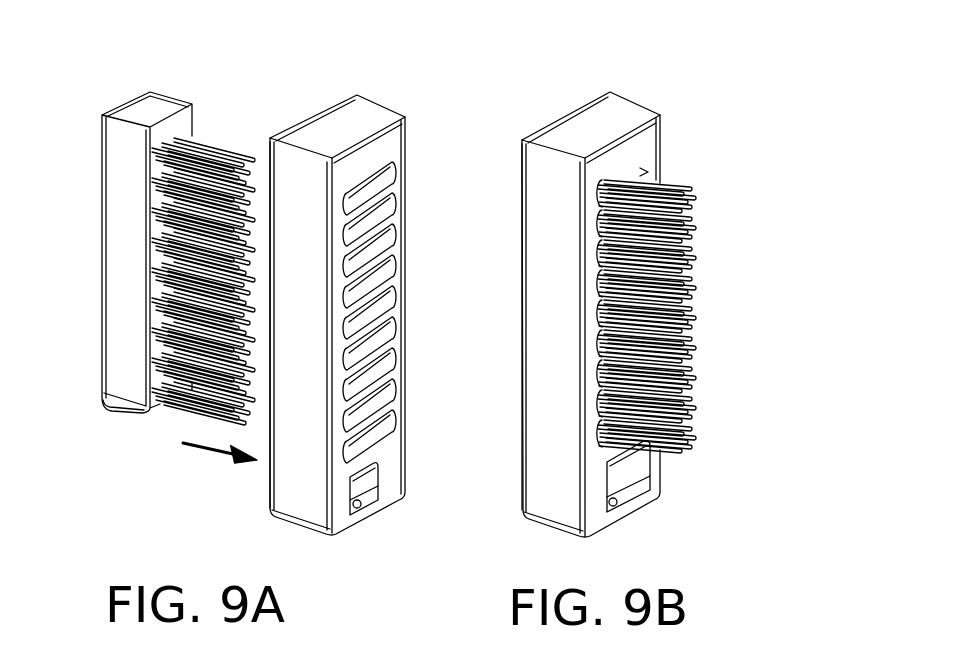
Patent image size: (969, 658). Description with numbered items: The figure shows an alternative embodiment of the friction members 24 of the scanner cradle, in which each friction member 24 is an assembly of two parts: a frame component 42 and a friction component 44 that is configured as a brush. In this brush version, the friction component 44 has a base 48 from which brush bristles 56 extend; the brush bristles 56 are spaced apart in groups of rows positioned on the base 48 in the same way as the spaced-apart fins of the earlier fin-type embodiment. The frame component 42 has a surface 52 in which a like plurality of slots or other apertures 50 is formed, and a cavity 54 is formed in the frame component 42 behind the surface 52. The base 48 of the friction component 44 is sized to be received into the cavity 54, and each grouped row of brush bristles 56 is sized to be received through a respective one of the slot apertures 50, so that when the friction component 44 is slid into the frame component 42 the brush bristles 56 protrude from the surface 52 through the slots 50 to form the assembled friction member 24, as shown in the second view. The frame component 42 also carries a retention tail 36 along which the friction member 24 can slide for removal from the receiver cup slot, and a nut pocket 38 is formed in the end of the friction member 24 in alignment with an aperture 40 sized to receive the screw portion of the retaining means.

In FIG. 9A, the friction member 24 is at (411, 84).
In FIG. 9A, the retention tail 36 is at (380, 103).
In FIG. 9B, the retention tail 36 is at (633, 102).
In FIG. 9A, the nut pocket 38 is at (377, 483).
In FIG. 9B, the nut pocket 38 is at (633, 478).
In FIG. 9A, the aperture 40 is at (364, 506).
In FIG. 9B, the aperture 40 is at (632, 512).
In FIG. 9A, the frame component 42 is at (313, 362).
In FIG. 9B, the frame component 42 is at (564, 335).
In FIG. 9A, the friction component 44 is at (122, 410).
In FIG. 9A, the base 48 is at (118, 239).
In FIG. 9A, the slot apertures 50 is at (388, 224).
In FIG. 9B, the slot apertures 50 is at (643, 172).
In FIG. 9A, the surface 52 is at (382, 148).
In FIG. 9B, the surface 52 is at (637, 147).
In FIG. 9A, the cavity 54 is at (268, 495).
In FIG. 9B, the cavity 54 is at (520, 425).
In FIG. 9A, the brush bristles 56 is at (225, 145).
In FIG. 9B, the brush bristles 56 is at (705, 447).